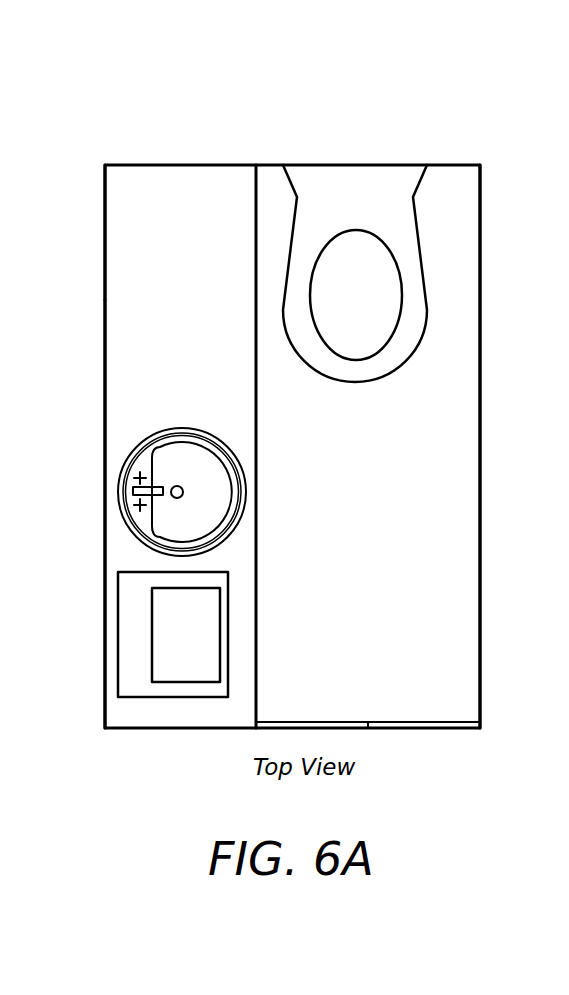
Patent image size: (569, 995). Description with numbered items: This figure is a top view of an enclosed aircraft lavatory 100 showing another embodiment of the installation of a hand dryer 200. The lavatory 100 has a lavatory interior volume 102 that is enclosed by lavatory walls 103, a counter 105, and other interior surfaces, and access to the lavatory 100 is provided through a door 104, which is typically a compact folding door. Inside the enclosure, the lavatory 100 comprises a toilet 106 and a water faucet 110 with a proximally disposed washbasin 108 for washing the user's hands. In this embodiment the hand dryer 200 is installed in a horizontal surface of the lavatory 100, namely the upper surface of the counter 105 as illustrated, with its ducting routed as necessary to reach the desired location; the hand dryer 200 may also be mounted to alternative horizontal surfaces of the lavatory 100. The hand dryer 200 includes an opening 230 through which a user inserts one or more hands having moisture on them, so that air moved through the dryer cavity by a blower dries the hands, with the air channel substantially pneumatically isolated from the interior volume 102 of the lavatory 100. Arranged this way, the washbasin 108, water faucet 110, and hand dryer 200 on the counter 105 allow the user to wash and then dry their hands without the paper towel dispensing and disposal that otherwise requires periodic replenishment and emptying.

The lavatory 100 is at (292, 118).
The lavatory interior volume 102 is at (432, 415).
The lavatory walls 103 is at (105, 315).
The door 104 is at (312, 720).
The counter 105 is at (115, 190).
The toilet 106 is at (335, 178).
The washbasin 108 is at (162, 430).
The water faucet 110 is at (133, 491).
The hand dryer 200 is at (228, 588).
The opening 230 is at (161, 683).